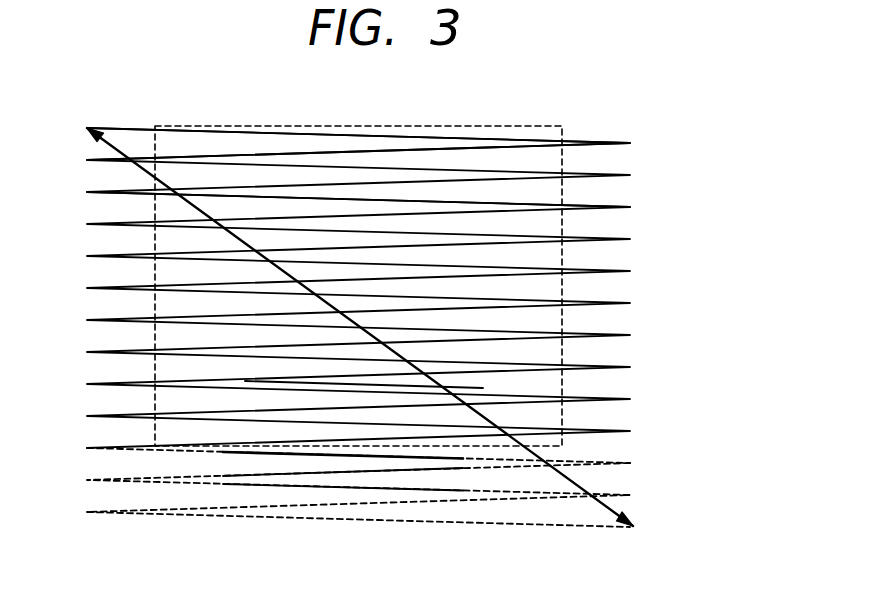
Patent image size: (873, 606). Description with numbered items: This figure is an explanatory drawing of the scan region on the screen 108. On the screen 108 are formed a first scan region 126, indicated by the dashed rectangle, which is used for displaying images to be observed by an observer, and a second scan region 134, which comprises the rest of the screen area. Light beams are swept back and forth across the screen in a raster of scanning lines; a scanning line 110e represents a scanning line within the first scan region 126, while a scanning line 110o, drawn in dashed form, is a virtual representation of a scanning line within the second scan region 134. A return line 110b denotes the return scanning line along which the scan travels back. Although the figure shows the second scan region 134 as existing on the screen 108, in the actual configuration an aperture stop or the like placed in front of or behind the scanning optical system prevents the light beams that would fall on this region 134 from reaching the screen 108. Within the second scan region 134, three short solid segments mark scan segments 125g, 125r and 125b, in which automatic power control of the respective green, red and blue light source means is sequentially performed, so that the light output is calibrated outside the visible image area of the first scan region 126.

The screen 108 is at (670, 138).
The first scan region 126 is at (445, 127).
The second scan region 134 is at (590, 133).
The scanning line 110e is at (497, 202).
The scanning line 110o is at (593, 462).
The return line 110b is at (618, 510).
The scan segment 125r is at (263, 490).
The scan segment 125b is at (287, 477).
The scan segment 125g is at (350, 457).